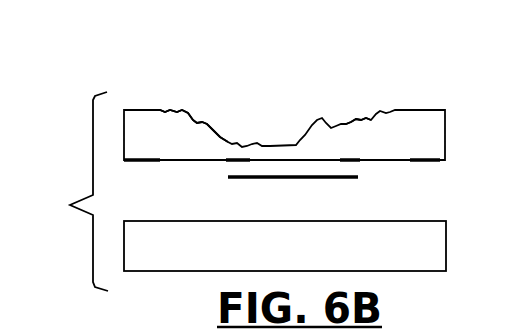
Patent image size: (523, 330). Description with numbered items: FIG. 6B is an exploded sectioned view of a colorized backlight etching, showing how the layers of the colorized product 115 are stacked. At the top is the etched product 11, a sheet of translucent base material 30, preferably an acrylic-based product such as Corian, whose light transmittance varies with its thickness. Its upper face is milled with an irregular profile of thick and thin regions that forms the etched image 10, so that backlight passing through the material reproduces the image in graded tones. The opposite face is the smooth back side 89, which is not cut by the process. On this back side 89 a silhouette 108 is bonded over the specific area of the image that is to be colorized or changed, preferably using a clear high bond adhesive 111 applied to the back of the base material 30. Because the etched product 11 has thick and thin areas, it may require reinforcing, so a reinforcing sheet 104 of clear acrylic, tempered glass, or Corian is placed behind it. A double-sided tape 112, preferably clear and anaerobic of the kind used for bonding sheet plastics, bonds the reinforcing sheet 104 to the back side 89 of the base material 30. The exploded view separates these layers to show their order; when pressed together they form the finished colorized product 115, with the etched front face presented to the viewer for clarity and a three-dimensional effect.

The etched product 11 is at (455, 113).
The base material 30 is at (158, 117).
The etched image 10 is at (212, 124).
The clear high bond adhesive 111 is at (348, 160).
The double-sided tape 112 is at (422, 161).
The back side 89 is at (375, 162).
The silhouette 108 is at (228, 178).
The reinforcing sheet 104 is at (188, 256).
The colorized product 115 is at (65, 191).